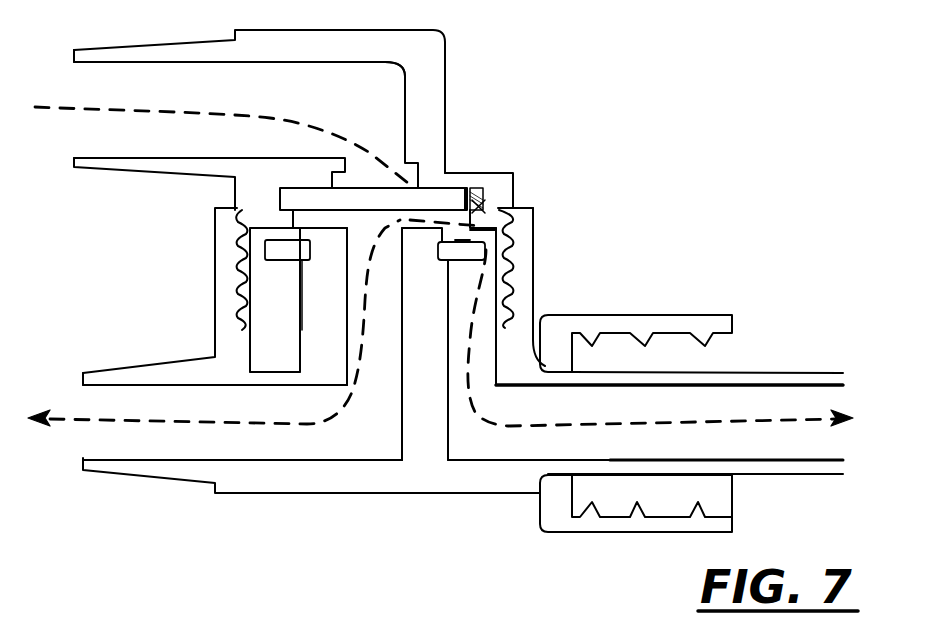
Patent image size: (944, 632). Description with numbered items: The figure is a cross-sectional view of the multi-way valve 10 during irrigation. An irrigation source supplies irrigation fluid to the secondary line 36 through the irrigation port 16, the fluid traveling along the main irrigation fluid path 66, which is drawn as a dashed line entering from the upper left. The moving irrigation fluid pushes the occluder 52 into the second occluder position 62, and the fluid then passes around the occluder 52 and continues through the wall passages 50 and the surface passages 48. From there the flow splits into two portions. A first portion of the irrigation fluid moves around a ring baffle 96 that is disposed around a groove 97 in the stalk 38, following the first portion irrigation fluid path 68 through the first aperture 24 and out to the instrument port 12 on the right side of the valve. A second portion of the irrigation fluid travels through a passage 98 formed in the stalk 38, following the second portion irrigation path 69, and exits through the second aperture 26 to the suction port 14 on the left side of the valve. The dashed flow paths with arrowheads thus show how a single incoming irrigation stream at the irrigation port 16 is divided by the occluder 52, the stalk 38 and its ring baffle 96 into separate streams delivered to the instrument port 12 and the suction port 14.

The multi-way valve 10 is at (523, 55).
The instrument port 12 is at (780, 460).
The suction port 14 is at (125, 456).
The irrigation port 16 is at (93, 60).
The first aperture 24 is at (510, 383).
The second aperture 26 is at (337, 387).
The secondary line 36 is at (400, 64).
The stalk 38 is at (327, 302).
The surface passages 48 is at (478, 211).
The wall passages 50 is at (479, 190).
The occluder 52 is at (300, 202).
The second occluder position 62 is at (466, 125).
The main irrigation fluid path 66 is at (38, 107).
The first portion irrigation fluid path 68 is at (823, 425).
The second portion irrigation path 69 is at (55, 418).
The ring baffle 96 is at (283, 250).
The groove 97 is at (312, 252).
The passage 98 is at (398, 360).